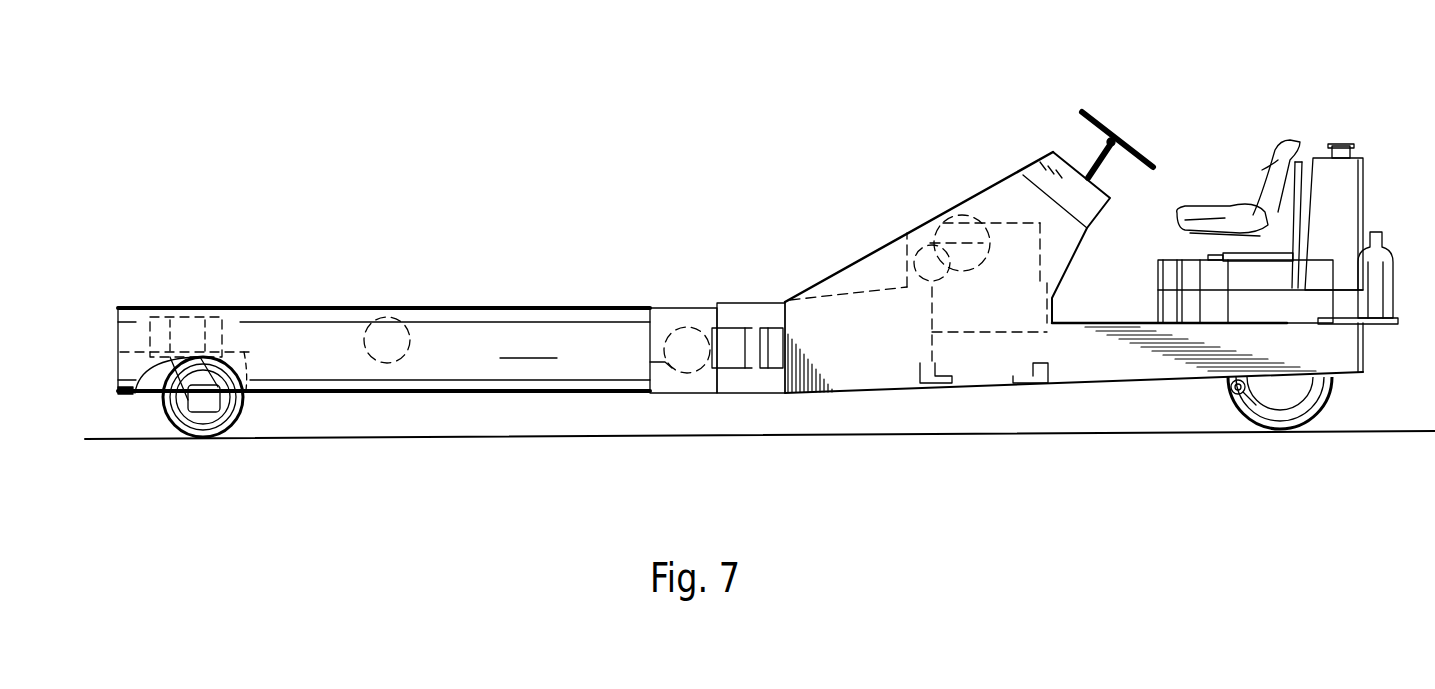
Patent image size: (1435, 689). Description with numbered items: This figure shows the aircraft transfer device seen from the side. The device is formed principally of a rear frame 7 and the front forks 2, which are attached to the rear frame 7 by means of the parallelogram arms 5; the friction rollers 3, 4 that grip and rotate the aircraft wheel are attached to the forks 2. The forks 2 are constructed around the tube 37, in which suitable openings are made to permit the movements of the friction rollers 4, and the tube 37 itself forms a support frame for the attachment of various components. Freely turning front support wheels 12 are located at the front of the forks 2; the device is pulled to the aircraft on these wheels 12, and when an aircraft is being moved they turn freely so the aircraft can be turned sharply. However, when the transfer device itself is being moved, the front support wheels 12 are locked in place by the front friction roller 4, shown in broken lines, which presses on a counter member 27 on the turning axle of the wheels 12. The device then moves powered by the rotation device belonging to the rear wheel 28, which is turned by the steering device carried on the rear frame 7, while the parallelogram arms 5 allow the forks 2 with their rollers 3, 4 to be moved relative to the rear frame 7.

The front fork 2 is at (492, 298).
The friction roller 3 is at (682, 327).
The front friction roller 4 is at (388, 333).
The parallelogram arm 5 is at (756, 287).
The rear frame 7 is at (1193, 148).
The front support wheel 12 is at (217, 438).
The counter member 27 is at (223, 325).
The rear wheel 28 is at (1287, 430).
The tube 37 is at (528, 345).